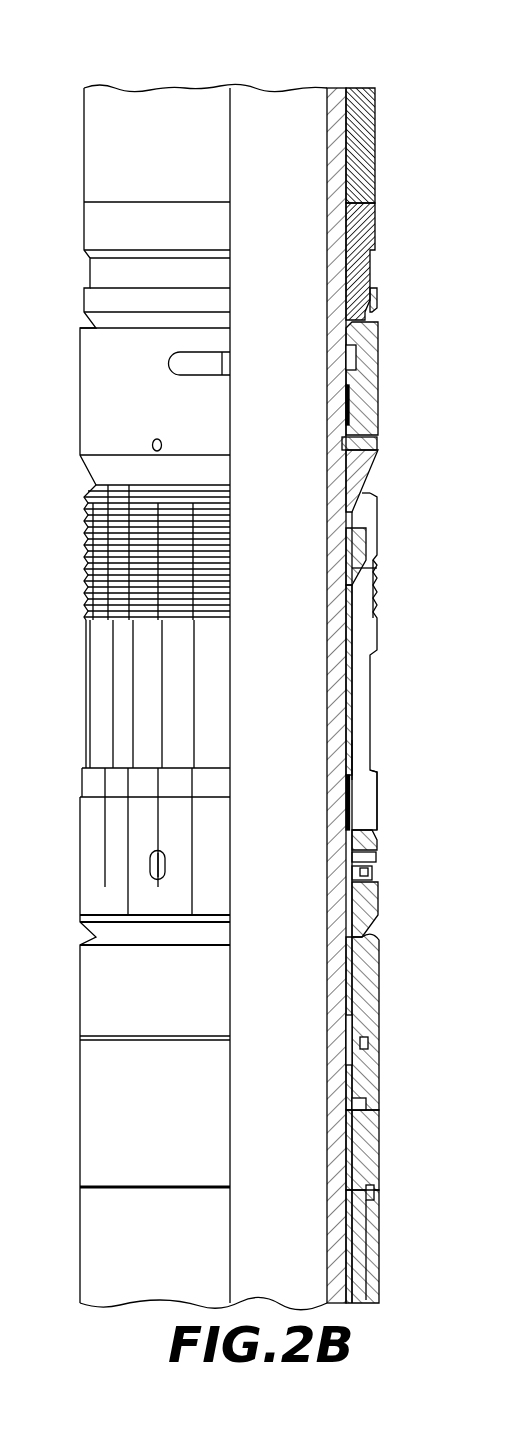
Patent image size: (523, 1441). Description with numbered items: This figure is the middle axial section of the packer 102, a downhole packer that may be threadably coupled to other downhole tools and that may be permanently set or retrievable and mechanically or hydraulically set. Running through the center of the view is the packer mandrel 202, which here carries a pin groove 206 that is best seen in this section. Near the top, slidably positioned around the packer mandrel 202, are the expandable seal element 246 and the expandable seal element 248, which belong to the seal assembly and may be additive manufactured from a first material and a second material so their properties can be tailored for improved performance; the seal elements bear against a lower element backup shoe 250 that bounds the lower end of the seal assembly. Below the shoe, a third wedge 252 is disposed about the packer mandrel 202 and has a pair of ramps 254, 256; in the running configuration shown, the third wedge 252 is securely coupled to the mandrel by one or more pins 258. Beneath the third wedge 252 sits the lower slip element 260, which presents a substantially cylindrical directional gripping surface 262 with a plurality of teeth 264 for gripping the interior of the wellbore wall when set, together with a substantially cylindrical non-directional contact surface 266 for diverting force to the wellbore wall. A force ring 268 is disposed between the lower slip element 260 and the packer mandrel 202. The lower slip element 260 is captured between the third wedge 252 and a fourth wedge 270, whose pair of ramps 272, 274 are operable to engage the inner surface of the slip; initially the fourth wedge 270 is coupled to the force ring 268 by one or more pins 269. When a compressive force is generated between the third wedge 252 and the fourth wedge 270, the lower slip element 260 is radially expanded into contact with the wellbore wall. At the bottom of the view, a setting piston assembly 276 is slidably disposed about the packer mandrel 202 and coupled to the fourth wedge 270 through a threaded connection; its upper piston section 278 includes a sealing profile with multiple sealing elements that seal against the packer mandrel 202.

The packer 102 is at (104, 76).
The packer mandrel 202 is at (353, 757).
The pin groove 206 is at (337, 437).
The expandable seal element 246 is at (376, 165).
The expandable seal element 248 is at (376, 234).
The lower element backup shoe 250 is at (378, 300).
The third wedge 252 is at (372, 380).
The ramp 254 is at (373, 462).
The ramp 256 is at (376, 568).
The pin 258 is at (378, 443).
The lower slip element 260 is at (370, 705).
The directional gripping surface 262 is at (366, 543).
The teeth 264 is at (377, 597).
The non-directional contact surface 266 is at (380, 808).
The force ring 268 is at (349, 733).
The pin 269 is at (376, 862).
The fourth wedge 270 is at (369, 981).
The ramp 272 is at (363, 935).
The ramp 274 is at (357, 833).
The setting piston assembly 276 is at (379, 1220).
The upper piston section 278 is at (370, 1135).